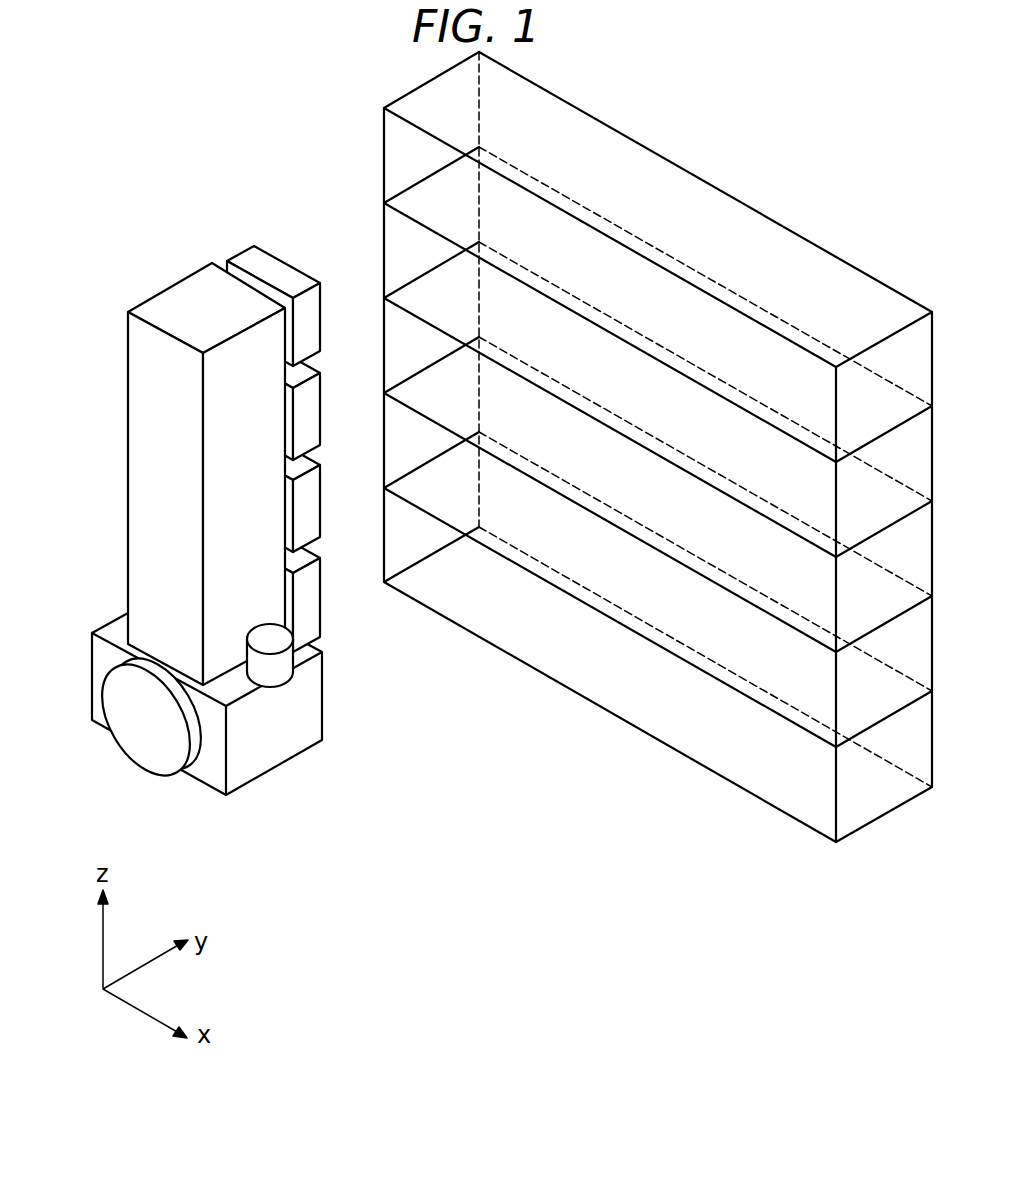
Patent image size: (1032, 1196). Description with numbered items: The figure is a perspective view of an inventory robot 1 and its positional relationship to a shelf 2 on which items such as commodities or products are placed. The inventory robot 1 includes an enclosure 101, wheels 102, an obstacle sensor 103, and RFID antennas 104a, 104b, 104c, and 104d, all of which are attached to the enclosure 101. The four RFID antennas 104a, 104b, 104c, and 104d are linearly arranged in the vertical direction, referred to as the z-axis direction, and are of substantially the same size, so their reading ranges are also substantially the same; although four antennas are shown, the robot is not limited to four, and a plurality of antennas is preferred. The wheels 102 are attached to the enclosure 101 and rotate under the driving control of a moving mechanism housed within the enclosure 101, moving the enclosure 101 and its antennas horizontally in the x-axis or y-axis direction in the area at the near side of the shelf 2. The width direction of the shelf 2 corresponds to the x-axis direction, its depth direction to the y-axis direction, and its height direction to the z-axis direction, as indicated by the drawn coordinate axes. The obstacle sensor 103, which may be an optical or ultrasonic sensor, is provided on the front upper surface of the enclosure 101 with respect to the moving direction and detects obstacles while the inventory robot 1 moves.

The inventory robot 1 is at (201, 465).
The shelf 2 is at (765, 214).
The enclosure 101 is at (100, 682).
The wheels 102 is at (146, 750).
The obstacle sensor 103 is at (290, 673).
The RFID antenna 104a is at (249, 261).
The RFID antenna 104b is at (312, 422).
The RFID antenna 104c is at (312, 510).
The RFID antenna 104d is at (312, 600).